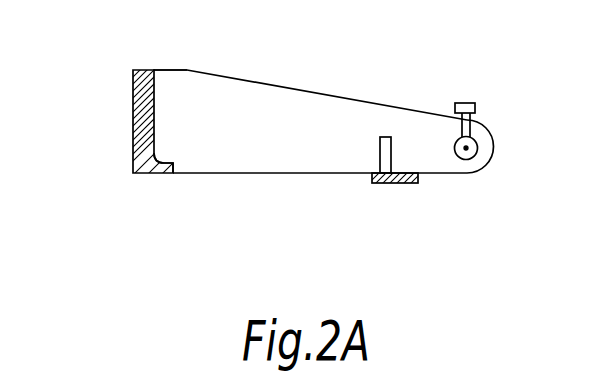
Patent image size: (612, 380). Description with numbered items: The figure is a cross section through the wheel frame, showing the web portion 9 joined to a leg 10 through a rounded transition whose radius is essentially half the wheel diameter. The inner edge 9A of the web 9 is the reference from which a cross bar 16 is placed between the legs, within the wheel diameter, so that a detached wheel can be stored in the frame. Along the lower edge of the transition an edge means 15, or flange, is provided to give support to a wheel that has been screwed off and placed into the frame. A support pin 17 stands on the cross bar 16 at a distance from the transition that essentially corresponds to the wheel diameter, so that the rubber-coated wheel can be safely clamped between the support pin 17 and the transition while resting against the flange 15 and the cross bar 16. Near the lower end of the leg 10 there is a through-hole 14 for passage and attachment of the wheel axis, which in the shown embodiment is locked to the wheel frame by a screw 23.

The web portion 9 is at (133, 113).
The inner edge of the web 9A is at (154, 100).
The leg 10 is at (310, 105).
The through-hole 14 is at (468, 150).
The edge means 15 is at (166, 172).
The cross bar 16 is at (388, 183).
The support pin 17 is at (380, 150).
The screw 23 is at (468, 118).